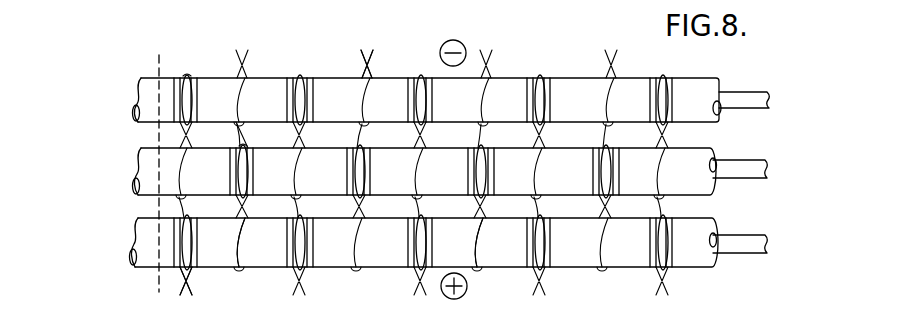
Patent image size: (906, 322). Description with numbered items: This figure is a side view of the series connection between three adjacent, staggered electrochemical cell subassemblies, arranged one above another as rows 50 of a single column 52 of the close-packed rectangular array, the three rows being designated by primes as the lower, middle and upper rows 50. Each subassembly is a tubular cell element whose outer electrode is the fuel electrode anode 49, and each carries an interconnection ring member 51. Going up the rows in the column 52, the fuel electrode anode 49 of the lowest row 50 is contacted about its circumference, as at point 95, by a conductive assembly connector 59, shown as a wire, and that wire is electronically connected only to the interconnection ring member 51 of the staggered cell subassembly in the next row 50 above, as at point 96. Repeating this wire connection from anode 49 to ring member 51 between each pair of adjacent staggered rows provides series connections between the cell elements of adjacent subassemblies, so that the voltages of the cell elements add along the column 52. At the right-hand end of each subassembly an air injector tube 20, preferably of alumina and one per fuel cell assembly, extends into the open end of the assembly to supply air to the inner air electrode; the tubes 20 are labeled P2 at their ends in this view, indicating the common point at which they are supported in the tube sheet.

The column 52 is at (155, 175).
The interconnection ring member 51 is at (186, 76).
The conductive assembly connector 59 is at (372, 62).
The fuel electrode 49 is at (500, 95).
The row 50 is at (393, 169).
The point 96 is at (243, 146).
The point 95 is at (237, 240).
The air injector tube 20 is at (742, 96).
The terminal P2 is at (793, 245).